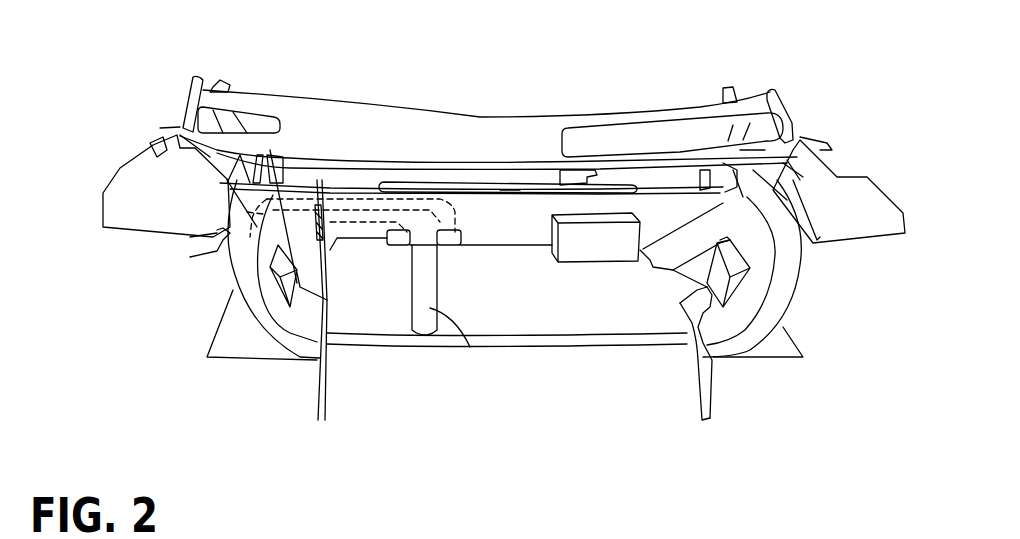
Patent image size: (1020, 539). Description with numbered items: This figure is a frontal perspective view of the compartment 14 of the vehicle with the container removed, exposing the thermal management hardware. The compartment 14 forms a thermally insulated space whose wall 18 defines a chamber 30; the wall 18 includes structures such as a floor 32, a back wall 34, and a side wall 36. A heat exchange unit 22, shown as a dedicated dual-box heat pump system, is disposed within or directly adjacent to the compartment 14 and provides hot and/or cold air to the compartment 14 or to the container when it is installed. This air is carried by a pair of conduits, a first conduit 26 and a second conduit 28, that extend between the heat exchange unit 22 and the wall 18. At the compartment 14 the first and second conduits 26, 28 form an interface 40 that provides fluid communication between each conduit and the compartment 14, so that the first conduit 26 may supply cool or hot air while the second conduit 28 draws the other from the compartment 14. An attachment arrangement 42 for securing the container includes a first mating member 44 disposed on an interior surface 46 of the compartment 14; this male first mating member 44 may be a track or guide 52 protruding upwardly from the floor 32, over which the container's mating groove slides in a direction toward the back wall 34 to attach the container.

The compartment 14 is at (445, 171).
The wall 18 is at (650, 193).
The heat exchange unit 22 is at (283, 240).
The first conduit 26 is at (357, 240).
The second conduit 28 is at (307, 230).
The chamber 30 is at (562, 295).
The floor 32 is at (473, 313).
The back wall 34 is at (505, 213).
The side wall 36 is at (740, 231).
The interface 40 is at (392, 248).
The attachment arrangement 42 is at (457, 285).
The first mating member 44 is at (410, 314).
The interior surface 46 is at (573, 318).
The guide 52 is at (440, 310).